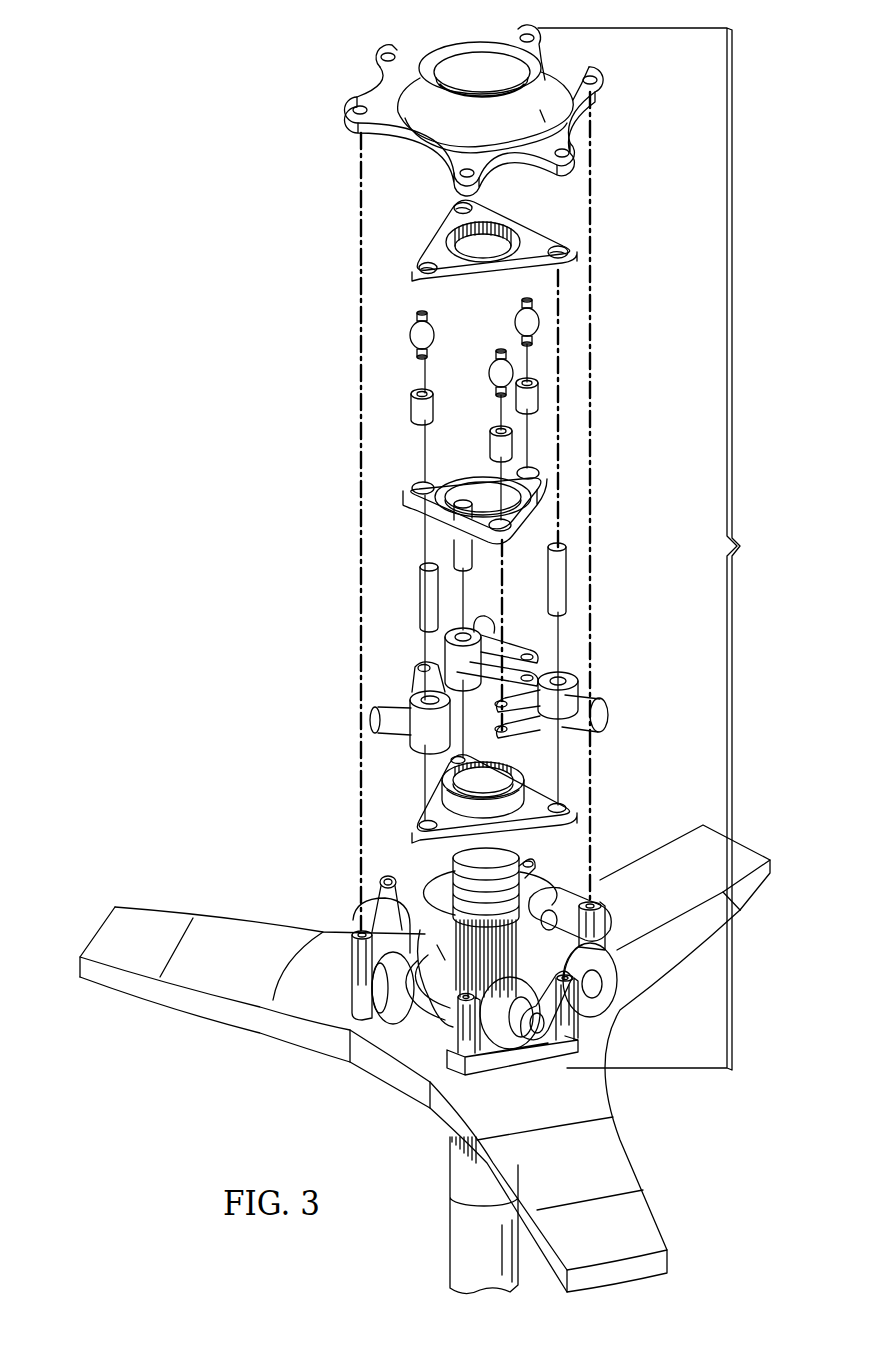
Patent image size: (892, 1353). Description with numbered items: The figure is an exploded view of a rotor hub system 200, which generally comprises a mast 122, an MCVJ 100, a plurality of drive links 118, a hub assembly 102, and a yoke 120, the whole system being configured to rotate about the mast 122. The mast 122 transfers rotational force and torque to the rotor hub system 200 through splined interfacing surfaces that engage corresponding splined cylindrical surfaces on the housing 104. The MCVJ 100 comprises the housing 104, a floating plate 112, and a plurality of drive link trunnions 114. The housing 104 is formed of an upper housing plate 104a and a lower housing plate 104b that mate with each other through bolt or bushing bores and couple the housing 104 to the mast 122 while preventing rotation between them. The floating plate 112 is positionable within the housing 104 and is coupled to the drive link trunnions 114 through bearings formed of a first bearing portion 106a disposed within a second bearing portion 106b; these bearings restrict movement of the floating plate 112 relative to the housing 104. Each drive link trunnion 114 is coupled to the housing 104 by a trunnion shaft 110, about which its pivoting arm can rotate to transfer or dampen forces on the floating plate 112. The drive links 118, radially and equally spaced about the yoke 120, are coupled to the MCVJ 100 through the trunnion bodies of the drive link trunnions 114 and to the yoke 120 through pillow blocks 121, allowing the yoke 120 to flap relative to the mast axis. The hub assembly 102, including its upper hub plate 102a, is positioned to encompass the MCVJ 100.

The MCVJ 100 is at (659, 549).
The rotor hub system 200 is at (205, 254).
The hub assembly 102 is at (488, 110).
The upper hub plate 102a is at (533, 50).
The housing 104 is at (477, 234).
The upper housing plate 104a is at (560, 213).
The lower housing plate 104b is at (542, 788).
The first bearing portion 106a is at (616, 303).
The second bearing portion 106b is at (410, 408).
The trunnion shaft 110 is at (478, 493).
The floating plate 112 is at (433, 530).
The drive link trunnion 114 is at (514, 643).
The drive link 118 is at (560, 876).
The yoke 120 is at (165, 920).
The pillow block 121 is at (350, 967).
The mast 122 is at (461, 1243).